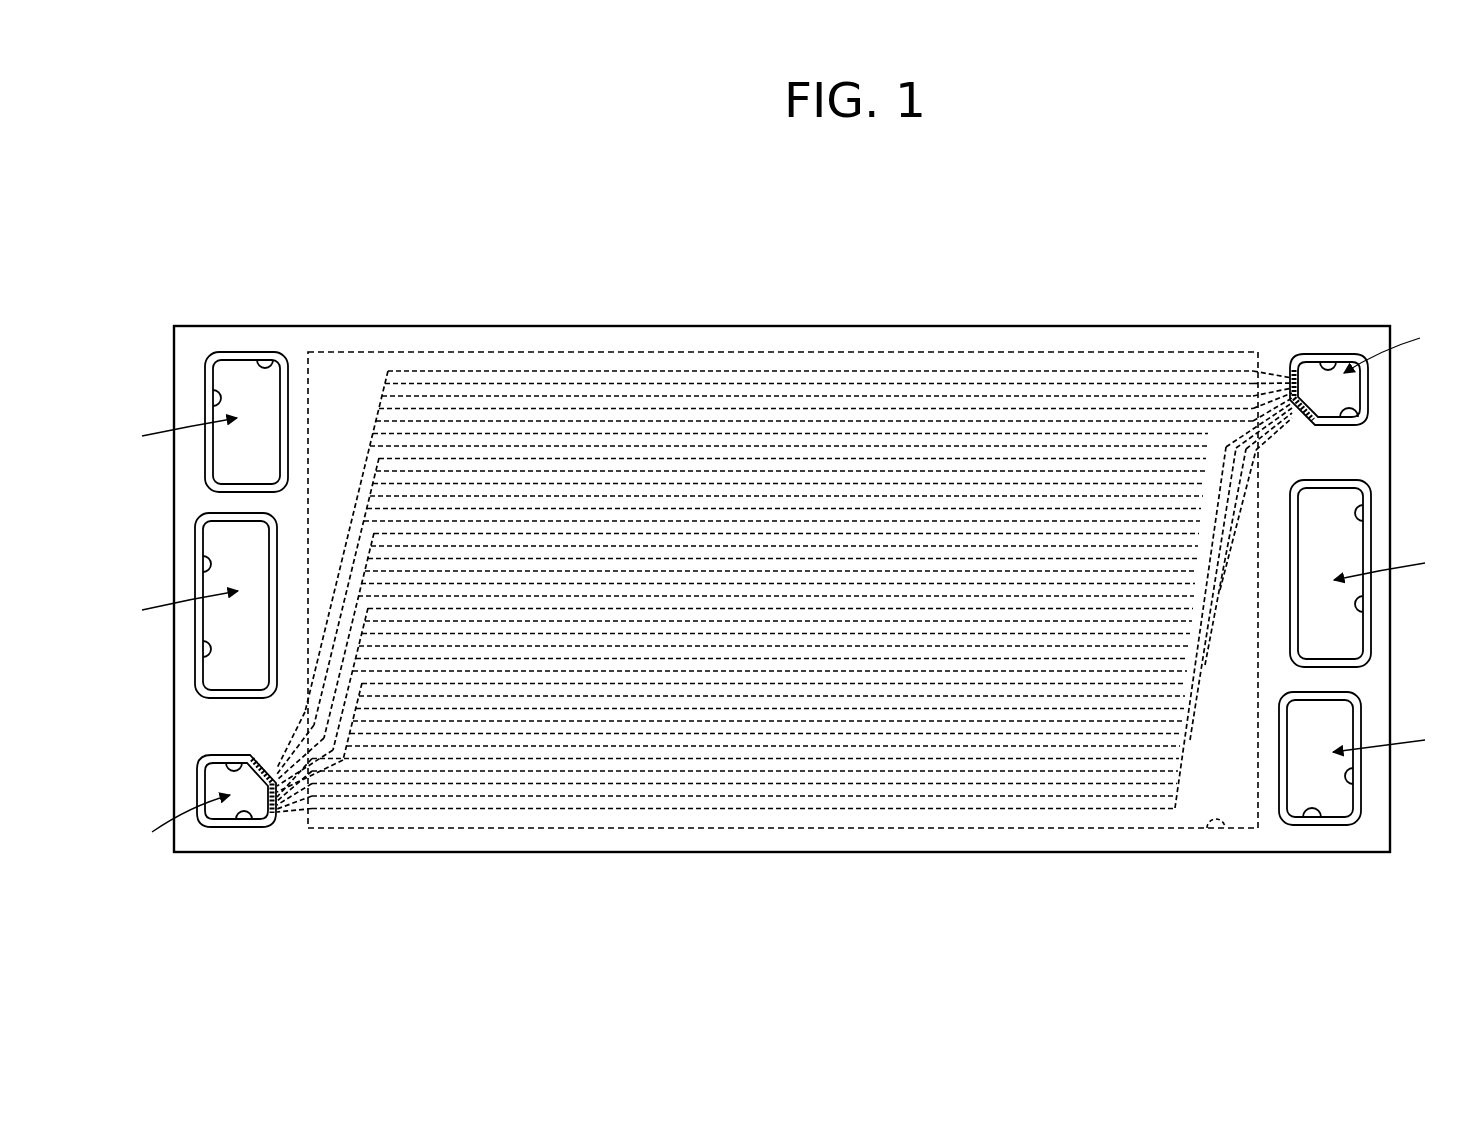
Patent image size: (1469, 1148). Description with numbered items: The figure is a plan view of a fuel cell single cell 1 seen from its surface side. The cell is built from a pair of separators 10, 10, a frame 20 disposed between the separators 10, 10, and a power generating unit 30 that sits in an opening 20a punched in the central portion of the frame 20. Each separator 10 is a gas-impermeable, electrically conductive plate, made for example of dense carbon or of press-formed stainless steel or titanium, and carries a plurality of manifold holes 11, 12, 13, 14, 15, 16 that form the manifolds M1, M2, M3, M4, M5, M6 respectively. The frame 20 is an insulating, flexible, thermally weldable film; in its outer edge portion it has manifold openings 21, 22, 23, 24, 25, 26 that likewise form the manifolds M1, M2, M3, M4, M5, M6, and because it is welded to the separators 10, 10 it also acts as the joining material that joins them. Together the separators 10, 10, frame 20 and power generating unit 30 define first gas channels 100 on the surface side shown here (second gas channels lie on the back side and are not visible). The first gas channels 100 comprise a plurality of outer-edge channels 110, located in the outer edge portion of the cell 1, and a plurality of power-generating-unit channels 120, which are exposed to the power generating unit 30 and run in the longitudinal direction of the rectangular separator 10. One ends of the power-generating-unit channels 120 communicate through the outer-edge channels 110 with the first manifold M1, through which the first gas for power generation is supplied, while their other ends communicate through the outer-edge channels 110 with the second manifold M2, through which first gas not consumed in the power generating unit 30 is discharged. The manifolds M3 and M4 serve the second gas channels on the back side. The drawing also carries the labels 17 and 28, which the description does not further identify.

The fuel cell single cell 1 is at (1290, 216).
The separator 10 is at (205, 326).
The manifold hole 11 is at (1320, 355).
The manifold hole 12 is at (226, 765).
The manifold hole 13 is at (224, 398).
The manifold hole 14 is at (1348, 776).
The manifold hole 15 is at (212, 657).
The manifold hole 16 is at (1353, 515).
The flexible printed circuit board 17 is at (783, 541).
The frame 20 is at (198, 500).
The opening 20a is at (1219, 832).
The manifold opening 21 is at (1358, 411).
The manifold opening 22 is at (247, 818).
The manifold opening 23 is at (266, 371).
The manifold opening 24 is at (1318, 826).
The manifold opening 25 is at (214, 566).
The manifold opening 26 is at (1350, 603).
The terminal portion 28 is at (264, 777).
The power generating unit 30 is at (340, 395).
The first gas channels 100 is at (972, 364).
The outer-edge channels 110 is at (283, 822).
The power-generating-unit channels 120 is at (845, 395).
The first manifold M1 is at (1401, 345).
The second manifold M2 is at (171, 822).
The manifold M3 is at (168, 435).
The manifold M4 is at (1399, 740).
The manifold M5 is at (169, 609).
The manifold M6 is at (1400, 563).